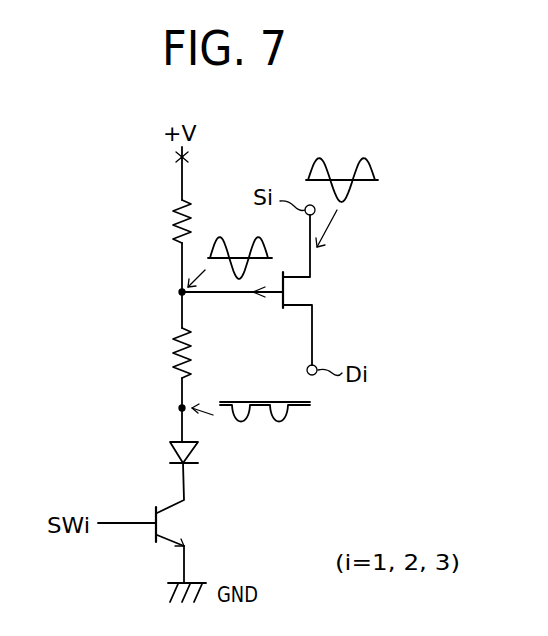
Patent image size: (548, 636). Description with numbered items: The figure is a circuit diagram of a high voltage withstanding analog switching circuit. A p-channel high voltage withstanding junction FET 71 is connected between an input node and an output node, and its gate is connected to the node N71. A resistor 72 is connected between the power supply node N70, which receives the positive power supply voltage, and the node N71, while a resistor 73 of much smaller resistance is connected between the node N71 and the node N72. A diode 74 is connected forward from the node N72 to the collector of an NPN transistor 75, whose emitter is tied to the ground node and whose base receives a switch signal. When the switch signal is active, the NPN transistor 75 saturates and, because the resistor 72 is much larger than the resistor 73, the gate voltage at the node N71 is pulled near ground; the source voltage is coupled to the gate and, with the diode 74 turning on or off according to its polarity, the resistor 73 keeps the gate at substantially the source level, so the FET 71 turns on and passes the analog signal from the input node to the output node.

The high voltage withstanding junction FET 71 is at (300, 298).
The resistor 72 is at (168, 210).
The resistor 73 is at (168, 353).
The diode 74 is at (173, 457).
The NPN transistor 75 is at (183, 511).
The power supply node N70 is at (178, 157).
The node N71 is at (178, 293).
The node N72 is at (180, 409).